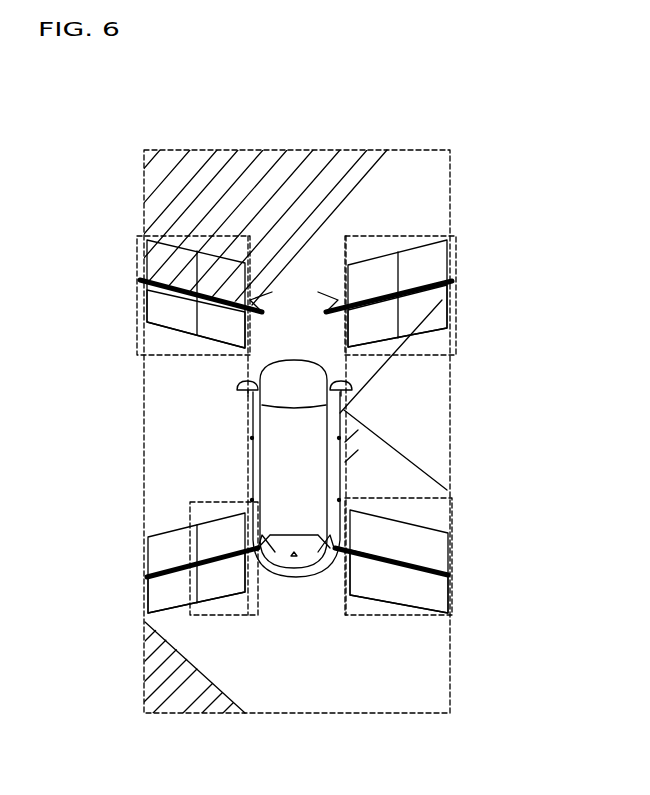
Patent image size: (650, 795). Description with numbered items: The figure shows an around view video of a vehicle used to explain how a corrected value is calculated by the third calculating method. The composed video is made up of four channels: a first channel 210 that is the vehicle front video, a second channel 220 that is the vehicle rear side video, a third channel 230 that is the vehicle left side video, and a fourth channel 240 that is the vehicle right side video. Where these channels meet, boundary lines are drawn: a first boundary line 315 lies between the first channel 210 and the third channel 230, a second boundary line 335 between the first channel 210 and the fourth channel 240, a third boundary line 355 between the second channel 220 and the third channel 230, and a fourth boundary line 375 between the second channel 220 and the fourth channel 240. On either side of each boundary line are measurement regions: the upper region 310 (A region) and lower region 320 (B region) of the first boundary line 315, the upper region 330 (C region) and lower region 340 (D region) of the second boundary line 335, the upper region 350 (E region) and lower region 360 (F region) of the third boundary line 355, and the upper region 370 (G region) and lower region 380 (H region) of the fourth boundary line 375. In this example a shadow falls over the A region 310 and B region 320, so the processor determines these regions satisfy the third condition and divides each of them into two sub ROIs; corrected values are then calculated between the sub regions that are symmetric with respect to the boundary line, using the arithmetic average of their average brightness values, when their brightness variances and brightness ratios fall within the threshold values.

The first channel 210 is at (282, 196).
The second channel 220 is at (297, 690).
The third channel 230 is at (170, 398).
The fourth channel 240 is at (413, 428).
The upper region (A region) 310 is at (147, 253).
The first boundary line 315 is at (140, 281).
The lower region (B region) 320 is at (147, 307).
The upper region (C region) 330 is at (450, 255).
The second boundary line 335 is at (452, 281).
The lower region (D region) 340 is at (450, 305).
The upper region (E region) 350 is at (148, 553).
The third boundary line 355 is at (147, 577).
The lower region (F region) 360 is at (147, 607).
The upper region (G region) 370 is at (450, 550).
The fourth boundary line 375 is at (450, 575).
The lower region (H region) 380 is at (450, 600).